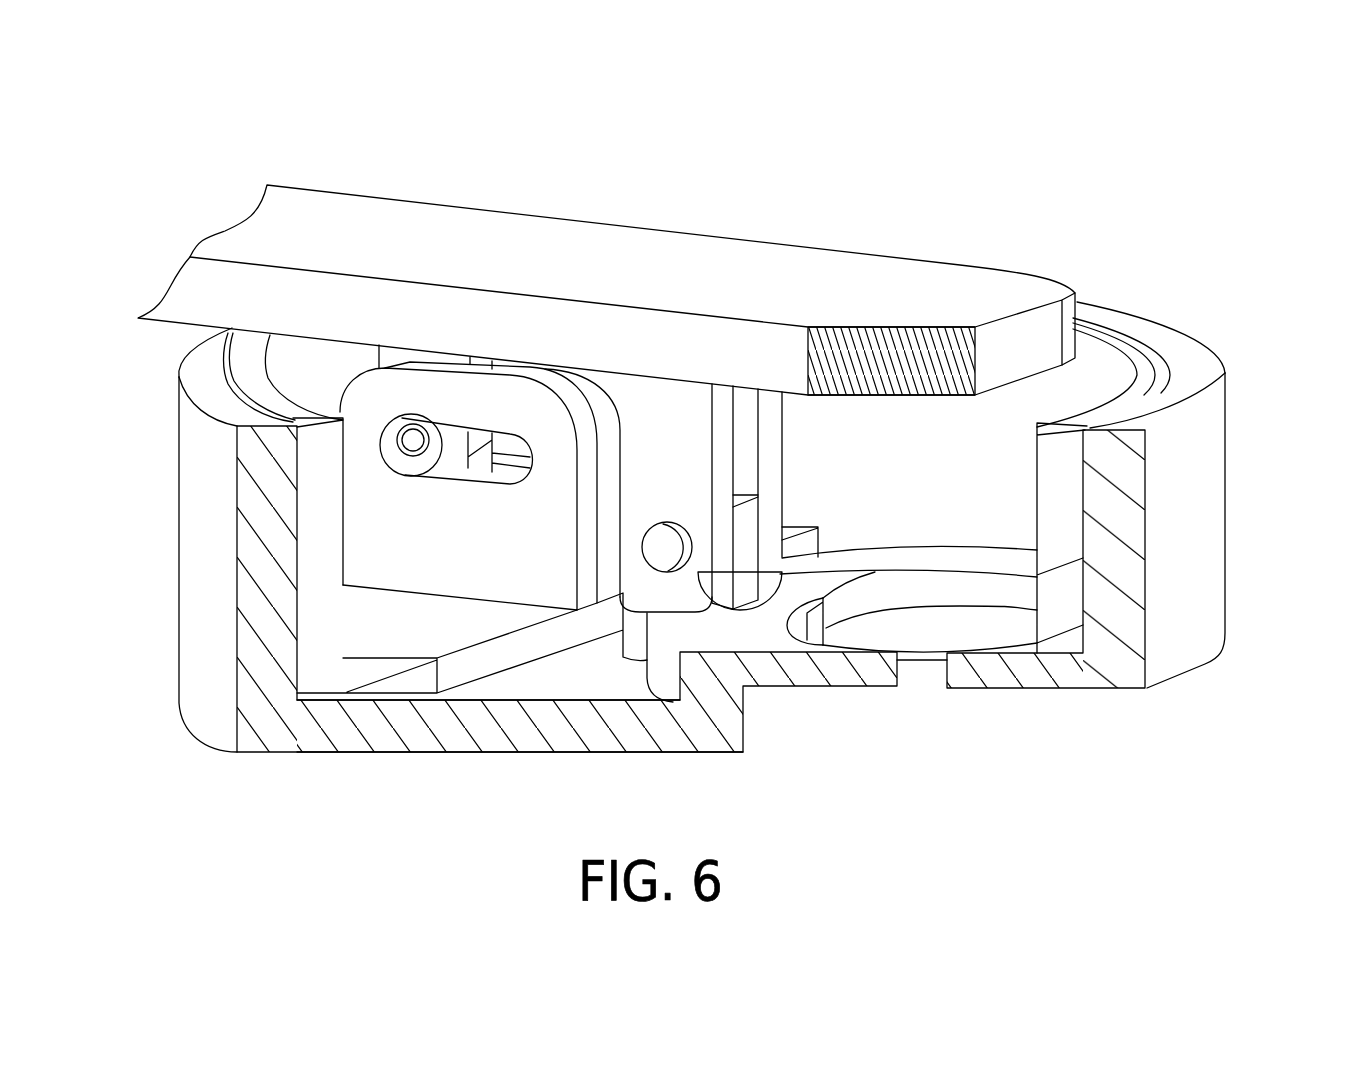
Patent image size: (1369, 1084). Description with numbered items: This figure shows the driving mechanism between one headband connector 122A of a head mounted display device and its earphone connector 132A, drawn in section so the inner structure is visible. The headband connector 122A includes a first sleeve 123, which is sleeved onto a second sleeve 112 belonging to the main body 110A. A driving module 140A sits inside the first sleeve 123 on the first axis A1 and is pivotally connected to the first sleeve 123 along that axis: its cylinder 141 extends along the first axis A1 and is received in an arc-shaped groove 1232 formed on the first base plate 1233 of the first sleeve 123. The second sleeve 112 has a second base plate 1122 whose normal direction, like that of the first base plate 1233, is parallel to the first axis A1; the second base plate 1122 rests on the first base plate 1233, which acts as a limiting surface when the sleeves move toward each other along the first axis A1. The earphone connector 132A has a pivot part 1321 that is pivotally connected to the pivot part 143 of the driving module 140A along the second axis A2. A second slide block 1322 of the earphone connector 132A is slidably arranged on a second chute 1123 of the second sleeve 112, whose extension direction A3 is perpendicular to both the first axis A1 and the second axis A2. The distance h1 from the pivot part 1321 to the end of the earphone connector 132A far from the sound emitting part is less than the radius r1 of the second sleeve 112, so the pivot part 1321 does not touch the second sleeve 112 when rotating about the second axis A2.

The earphone connector 132A is at (483, 233).
The first axis A1 is at (677, 825).
The second axis A2 is at (850, 478).
The extension direction A3 is at (1265, 538).
The radius of the second sleeve r1 is at (1168, 355).
The distance h1 is at (1020, 378).
The main body 110A is at (786, 366).
The second sleeve 112 is at (1148, 387).
The headband connector 122A is at (764, 527).
The first sleeve 123 is at (1167, 413).
The second base plate 1122 is at (335, 682).
The second chute 1123 is at (450, 473).
The arc-shaped groove 1232 is at (732, 613).
The first base plate 1233 is at (353, 742).
The pivot part 1321 is at (863, 580).
The second slide block 1322 is at (407, 447).
The driving module 140A is at (725, 693).
The cylinder 141 is at (637, 637).
The pivot part 143 is at (748, 590).